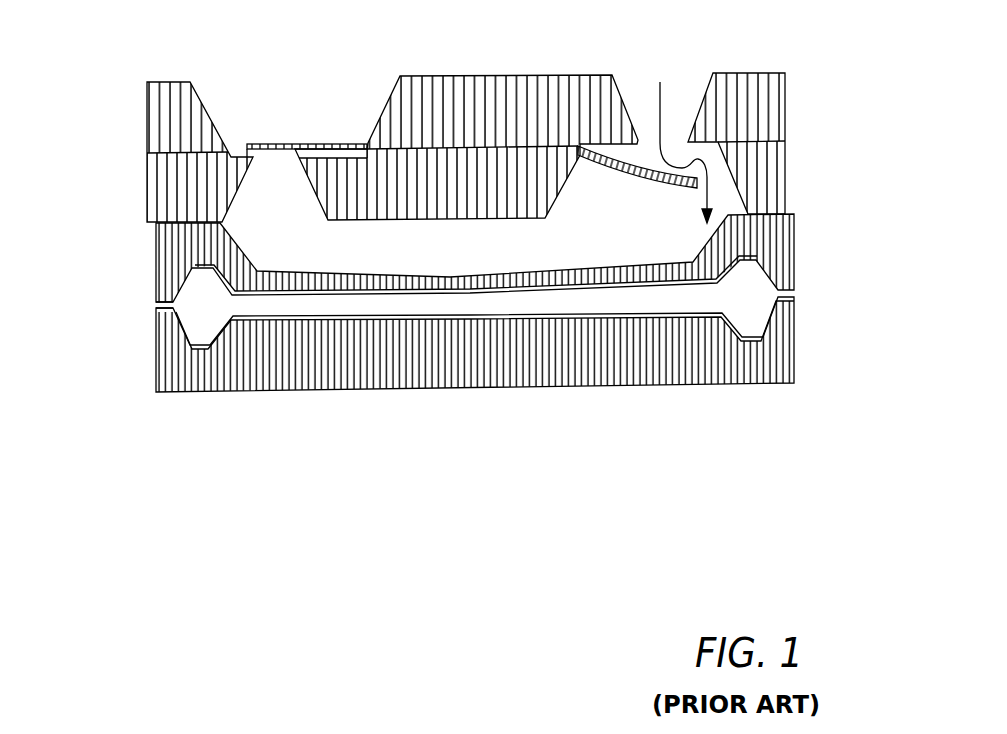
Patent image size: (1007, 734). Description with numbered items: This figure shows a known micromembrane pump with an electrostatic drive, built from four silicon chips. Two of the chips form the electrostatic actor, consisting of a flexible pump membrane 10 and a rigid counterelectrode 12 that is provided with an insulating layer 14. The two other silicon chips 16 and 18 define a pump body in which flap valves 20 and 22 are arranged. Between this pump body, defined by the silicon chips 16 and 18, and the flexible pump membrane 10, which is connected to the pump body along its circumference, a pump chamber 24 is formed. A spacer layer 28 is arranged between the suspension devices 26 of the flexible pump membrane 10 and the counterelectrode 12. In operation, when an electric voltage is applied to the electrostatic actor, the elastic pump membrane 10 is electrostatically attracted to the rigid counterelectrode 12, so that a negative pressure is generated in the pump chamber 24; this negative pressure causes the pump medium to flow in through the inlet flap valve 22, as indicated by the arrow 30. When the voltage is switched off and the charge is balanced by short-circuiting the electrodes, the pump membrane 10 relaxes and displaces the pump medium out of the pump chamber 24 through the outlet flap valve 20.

The flexible pump membrane 10 is at (448, 277).
The counterelectrode 12 is at (770, 370).
The insulating layer 14 is at (483, 330).
The silicon chip 16 is at (785, 107).
The silicon chip 18 is at (785, 177).
The outlet flap valve 20 is at (270, 136).
The inlet flap valve 22 is at (638, 178).
The pump chamber 24 is at (331, 247).
The suspension devices 26 is at (213, 280).
The spacer layer 28 is at (174, 320).
The arrow 30 is at (662, 92).